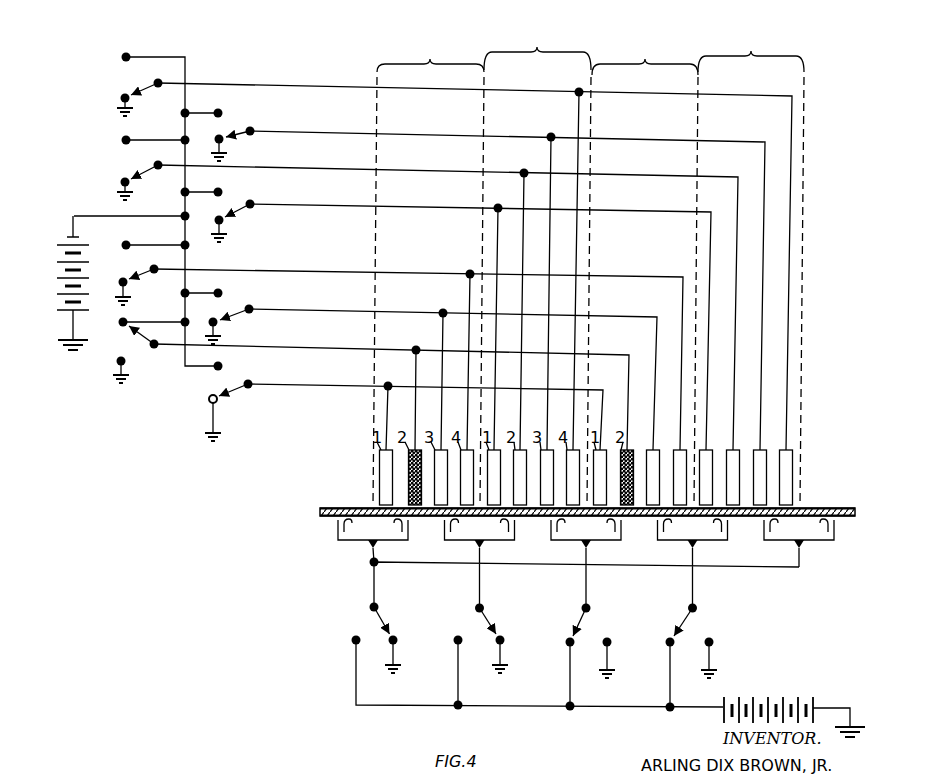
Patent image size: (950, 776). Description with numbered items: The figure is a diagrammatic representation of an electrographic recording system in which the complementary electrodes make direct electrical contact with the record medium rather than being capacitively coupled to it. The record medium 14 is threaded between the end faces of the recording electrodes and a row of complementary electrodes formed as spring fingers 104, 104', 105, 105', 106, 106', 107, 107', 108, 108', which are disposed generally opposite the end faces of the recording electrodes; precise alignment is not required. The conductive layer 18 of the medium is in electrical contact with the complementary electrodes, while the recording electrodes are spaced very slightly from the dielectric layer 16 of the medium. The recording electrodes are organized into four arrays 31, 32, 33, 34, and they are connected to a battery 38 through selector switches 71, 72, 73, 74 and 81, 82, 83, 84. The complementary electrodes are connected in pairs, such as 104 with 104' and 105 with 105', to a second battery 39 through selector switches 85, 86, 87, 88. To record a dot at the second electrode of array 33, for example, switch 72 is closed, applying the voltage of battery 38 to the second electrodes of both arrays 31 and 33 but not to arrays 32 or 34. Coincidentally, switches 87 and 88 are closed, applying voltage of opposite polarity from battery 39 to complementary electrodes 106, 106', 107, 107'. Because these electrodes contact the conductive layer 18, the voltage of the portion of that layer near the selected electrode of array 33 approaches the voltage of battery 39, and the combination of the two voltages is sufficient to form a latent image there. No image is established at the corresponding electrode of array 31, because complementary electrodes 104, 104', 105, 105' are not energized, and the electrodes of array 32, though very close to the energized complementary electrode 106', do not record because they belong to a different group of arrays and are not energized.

The record medium 14 is at (318, 511).
The dielectric layer 16 is at (350, 506).
The conductive layer 18 is at (330, 519).
The array 31 is at (430, 269).
The array 32 is at (537, 265).
The array 33 is at (645, 272).
The array 34 is at (751, 270).
The battery 38 is at (55, 262).
The battery 39 is at (760, 693).
The selector switch 71 is at (232, 380).
The selector switch 72 is at (142, 333).
The selector switch 73 is at (233, 313).
The selector switch 74 is at (152, 273).
The selector switch 81 is at (233, 207).
The selector switch 82 is at (152, 170).
The selector switch 83 is at (234, 130).
The selector switch 84 is at (152, 87).
The selector switch 85 is at (385, 617).
The selector switch 86 is at (490, 617).
The selector switch 87 is at (588, 620).
The selector switch 88 is at (698, 620).
The complementary electrode 104 is at (365, 544).
The complementary electrode 104' is at (373, 530).
The complementary electrode 105 is at (461, 541).
The complementary electrode 105' is at (480, 530).
The complementary electrode 106 is at (568, 542).
The complementary electrode 106' is at (586, 530).
The complementary electrode 107 is at (675, 543).
The complementary electrode 107' is at (693, 530).
The complementary electrode 108 is at (783, 543).
The complementary electrode 108' is at (799, 531).